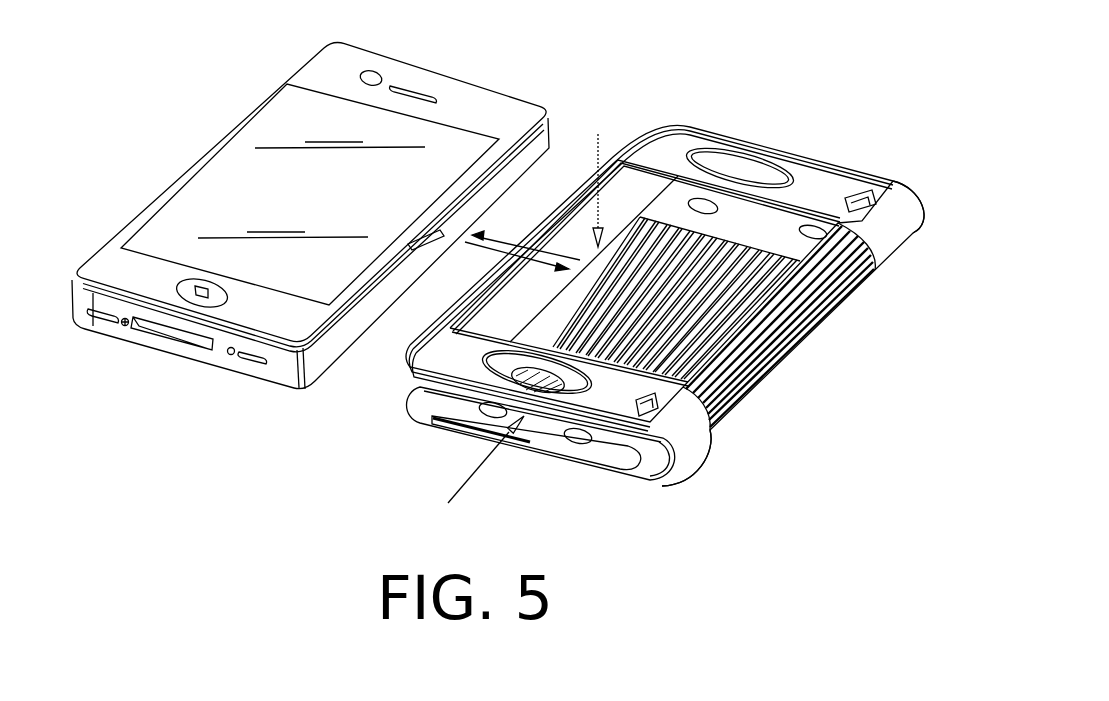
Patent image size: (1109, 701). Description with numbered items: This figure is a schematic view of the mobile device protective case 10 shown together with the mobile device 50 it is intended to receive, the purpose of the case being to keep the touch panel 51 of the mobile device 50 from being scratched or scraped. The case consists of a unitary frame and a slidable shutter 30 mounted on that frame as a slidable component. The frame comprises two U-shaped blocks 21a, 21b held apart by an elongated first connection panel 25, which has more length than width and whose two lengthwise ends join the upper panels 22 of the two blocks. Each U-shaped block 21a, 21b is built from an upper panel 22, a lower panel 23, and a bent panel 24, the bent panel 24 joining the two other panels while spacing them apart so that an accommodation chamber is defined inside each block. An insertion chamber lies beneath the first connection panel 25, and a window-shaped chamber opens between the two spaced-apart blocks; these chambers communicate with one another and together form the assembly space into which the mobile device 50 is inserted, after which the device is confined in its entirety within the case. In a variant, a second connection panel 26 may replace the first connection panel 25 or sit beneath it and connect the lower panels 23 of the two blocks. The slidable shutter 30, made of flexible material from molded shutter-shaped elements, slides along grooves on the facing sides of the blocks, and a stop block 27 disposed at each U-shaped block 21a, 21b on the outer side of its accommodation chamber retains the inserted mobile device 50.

The mobile device protective case 10 is at (864, 128).
The U-shaped block 21a is at (930, 210).
The U-shaped block 21b is at (677, 482).
The upper panel 22 is at (642, 142).
The lower panel 23 is at (420, 408).
The bent panel 24 is at (890, 237).
The first connection panel 25 is at (540, 233).
The second connection panel 26 is at (512, 308).
The stop block 27 is at (437, 423).
The slidable shutter 30 is at (793, 343).
The mobile device 50 is at (441, 47).
The touch panel 51 is at (247, 137).